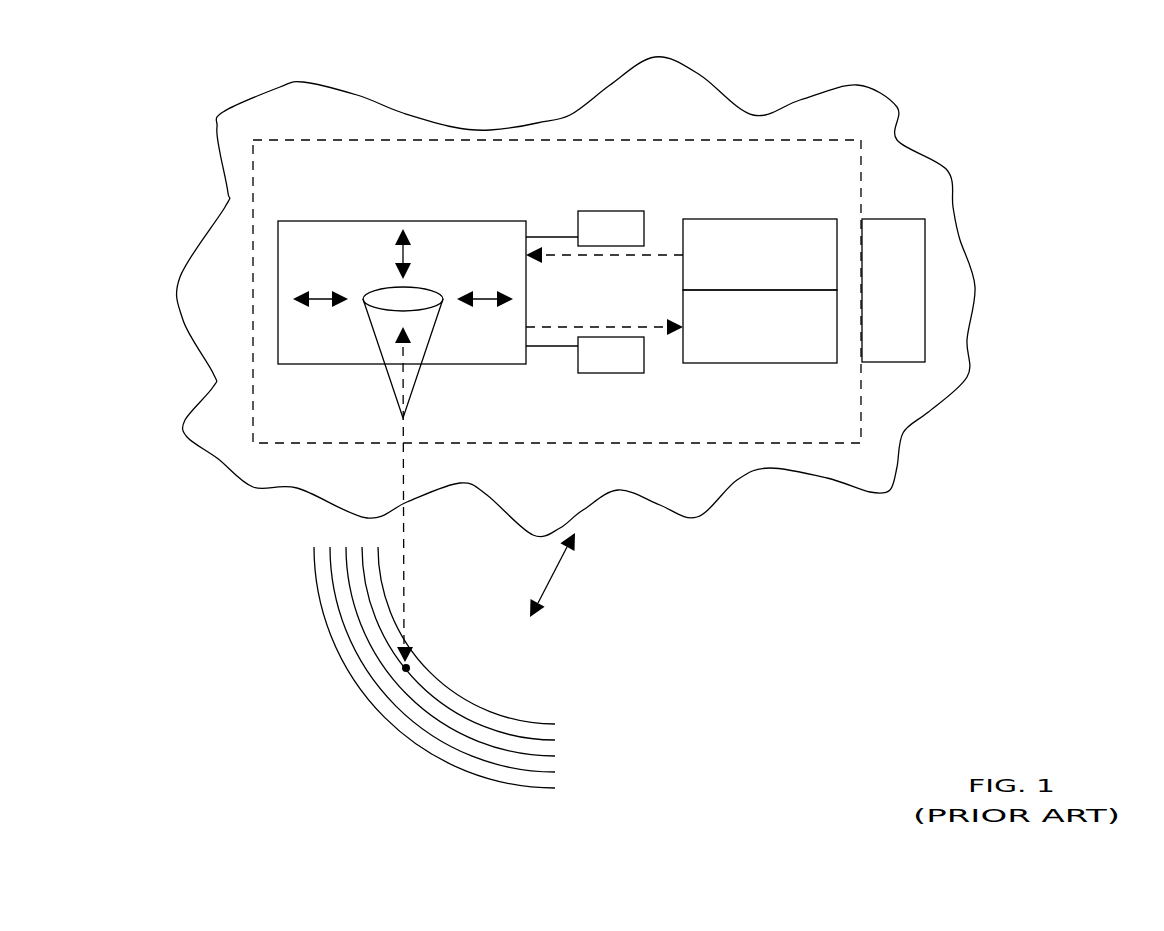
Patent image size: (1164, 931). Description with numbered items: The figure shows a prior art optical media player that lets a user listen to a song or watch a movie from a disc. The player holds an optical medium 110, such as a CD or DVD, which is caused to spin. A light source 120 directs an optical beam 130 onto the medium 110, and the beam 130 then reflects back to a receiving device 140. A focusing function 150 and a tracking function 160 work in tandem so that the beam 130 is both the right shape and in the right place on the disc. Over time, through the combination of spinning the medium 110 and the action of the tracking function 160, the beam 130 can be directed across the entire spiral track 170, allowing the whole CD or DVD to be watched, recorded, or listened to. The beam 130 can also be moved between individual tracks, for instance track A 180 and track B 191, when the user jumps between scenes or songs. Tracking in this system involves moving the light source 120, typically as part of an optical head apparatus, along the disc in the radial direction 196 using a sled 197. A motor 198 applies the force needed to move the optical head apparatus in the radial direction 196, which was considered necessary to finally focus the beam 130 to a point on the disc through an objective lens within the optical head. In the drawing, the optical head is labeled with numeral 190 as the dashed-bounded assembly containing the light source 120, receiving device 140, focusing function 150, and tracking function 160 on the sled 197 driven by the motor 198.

The optical medium 110 is at (533, 785).
The light source 120 is at (769, 242).
The optical beam 130 is at (404, 568).
The receiving device 140 is at (787, 347).
The focusing function 150 is at (585, 228).
The tracking function 160 is at (585, 355).
The spiral track 170 is at (322, 535).
The track A 180 is at (453, 708).
The optical head 190 is at (355, 92).
The track B 191 is at (448, 745).
The radial direction 196 is at (550, 575).
The sled 197 is at (253, 209).
The motor 198 is at (925, 280).